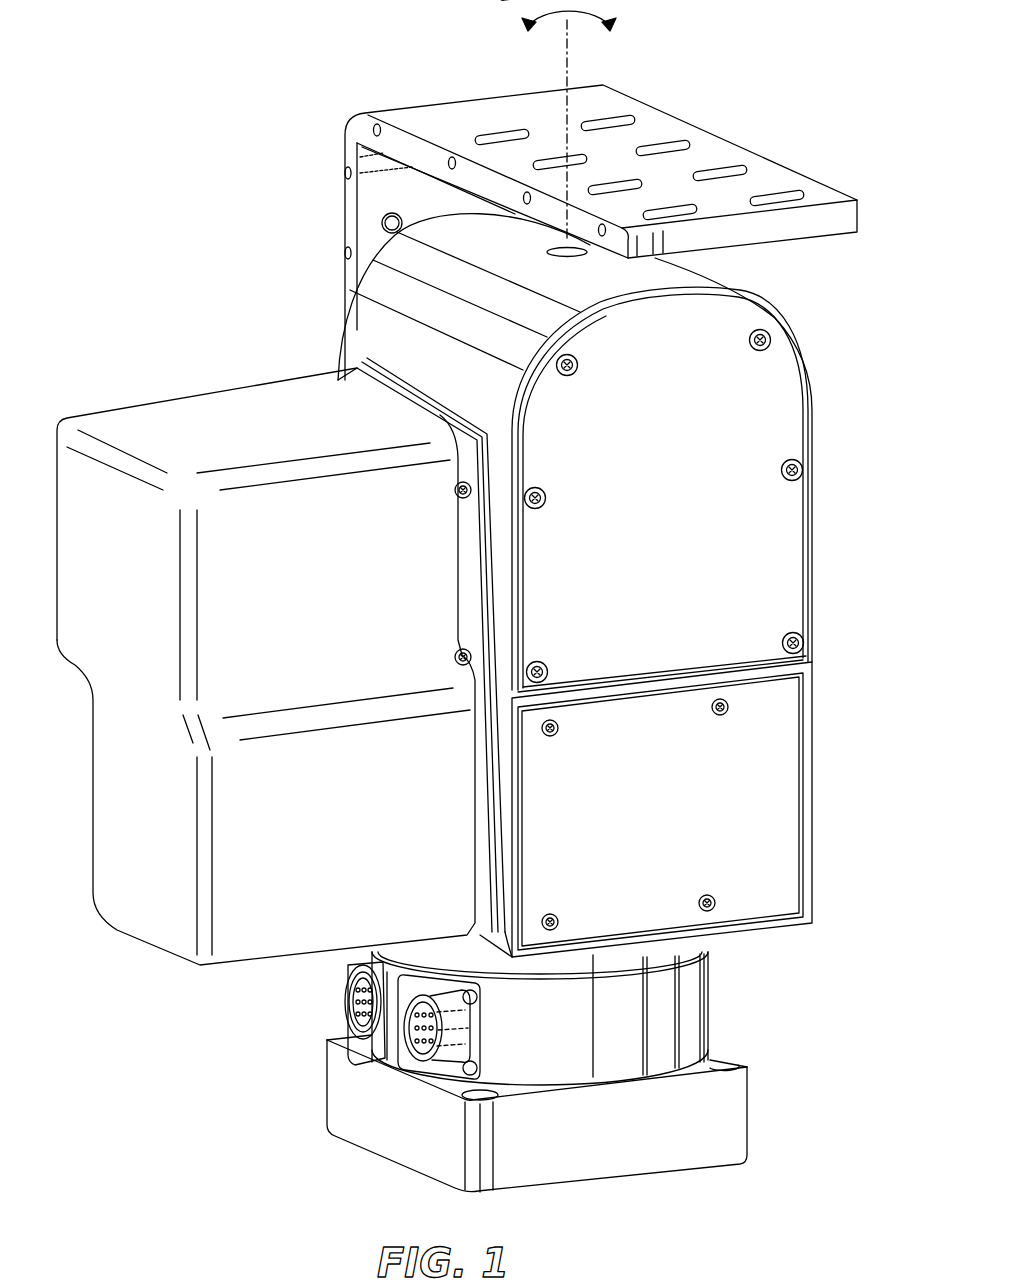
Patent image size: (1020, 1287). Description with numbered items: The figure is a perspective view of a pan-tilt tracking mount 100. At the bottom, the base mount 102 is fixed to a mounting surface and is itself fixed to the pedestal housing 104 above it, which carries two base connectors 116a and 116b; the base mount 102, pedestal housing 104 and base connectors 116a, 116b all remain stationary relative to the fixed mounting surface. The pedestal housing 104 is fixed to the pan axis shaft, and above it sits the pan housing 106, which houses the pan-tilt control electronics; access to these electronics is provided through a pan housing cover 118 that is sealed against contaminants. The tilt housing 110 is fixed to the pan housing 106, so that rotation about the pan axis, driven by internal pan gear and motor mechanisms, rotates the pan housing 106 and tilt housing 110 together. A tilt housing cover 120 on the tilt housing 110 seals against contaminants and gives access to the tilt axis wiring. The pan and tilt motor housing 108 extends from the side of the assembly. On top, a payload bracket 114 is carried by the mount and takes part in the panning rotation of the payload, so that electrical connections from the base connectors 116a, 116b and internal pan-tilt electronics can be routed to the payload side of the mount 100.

The pan-tilt tracking mount 100 is at (185, 160).
The base mount 102 is at (750, 1108).
The pedestal housing 104 is at (710, 1000).
The pan housing 106 is at (813, 832).
The pan and tilt motor housing 108 is at (187, 400).
The tilt housing 110 is at (813, 453).
The payload bracket 114 is at (741, 157).
The base connector 116a is at (407, 1037).
The base connector 116b is at (345, 995).
The pan housing cover 118 is at (782, 787).
The tilt housing cover 120 is at (783, 407).